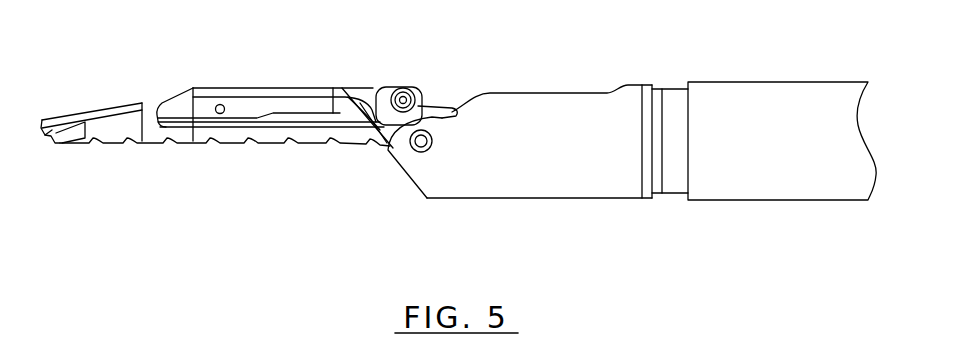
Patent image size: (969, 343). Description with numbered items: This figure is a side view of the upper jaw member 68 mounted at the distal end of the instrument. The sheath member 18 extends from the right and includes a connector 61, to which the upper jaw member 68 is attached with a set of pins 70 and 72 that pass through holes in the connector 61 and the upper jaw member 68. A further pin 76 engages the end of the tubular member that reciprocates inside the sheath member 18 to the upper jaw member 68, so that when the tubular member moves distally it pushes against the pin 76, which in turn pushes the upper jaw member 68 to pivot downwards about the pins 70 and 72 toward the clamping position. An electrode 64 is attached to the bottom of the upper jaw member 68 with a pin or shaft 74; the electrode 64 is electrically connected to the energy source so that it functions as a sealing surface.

The sheath member 18 is at (742, 82).
The connector 61 is at (585, 199).
The electrode 64 is at (68, 144).
The upper jaw member 68 is at (213, 88).
The pin 70 is at (390, 151).
The pin 72 is at (418, 153).
The pin or shaft 74 is at (225, 144).
The pin 76 is at (405, 88).